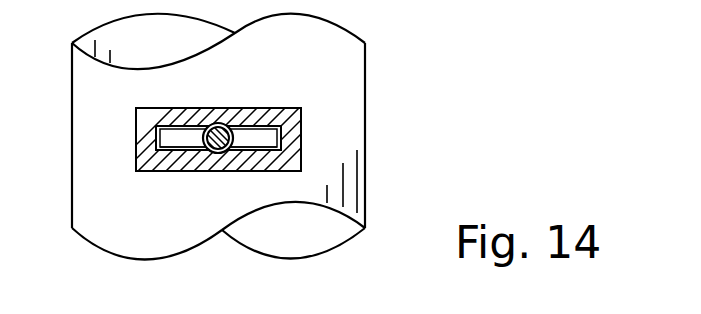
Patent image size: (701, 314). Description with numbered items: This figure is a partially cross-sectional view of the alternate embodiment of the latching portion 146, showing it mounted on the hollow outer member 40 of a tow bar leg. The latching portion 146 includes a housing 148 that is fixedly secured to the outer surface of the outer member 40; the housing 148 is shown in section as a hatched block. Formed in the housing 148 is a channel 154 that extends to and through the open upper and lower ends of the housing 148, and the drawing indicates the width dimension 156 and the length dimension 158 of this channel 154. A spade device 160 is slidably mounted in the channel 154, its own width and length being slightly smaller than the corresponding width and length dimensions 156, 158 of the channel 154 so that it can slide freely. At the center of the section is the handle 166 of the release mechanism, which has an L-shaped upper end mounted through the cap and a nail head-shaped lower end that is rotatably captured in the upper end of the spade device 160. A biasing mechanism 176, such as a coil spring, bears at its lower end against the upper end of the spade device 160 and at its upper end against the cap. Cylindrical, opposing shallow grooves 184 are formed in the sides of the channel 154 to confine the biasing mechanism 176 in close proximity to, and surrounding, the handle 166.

The outer member 40 is at (72, 122).
The alternate embodiment of the latching portion 146 is at (269, 104).
The housing 148 is at (297, 121).
The channel 154 is at (178, 128).
The width dimension 156 is at (313, 125).
The length dimension 158 is at (281, 185).
The spade device 160 is at (270, 145).
The handle 166 is at (218, 124).
The biasing mechanism 176 is at (200, 148).
The shallow grooves 184 is at (232, 127).